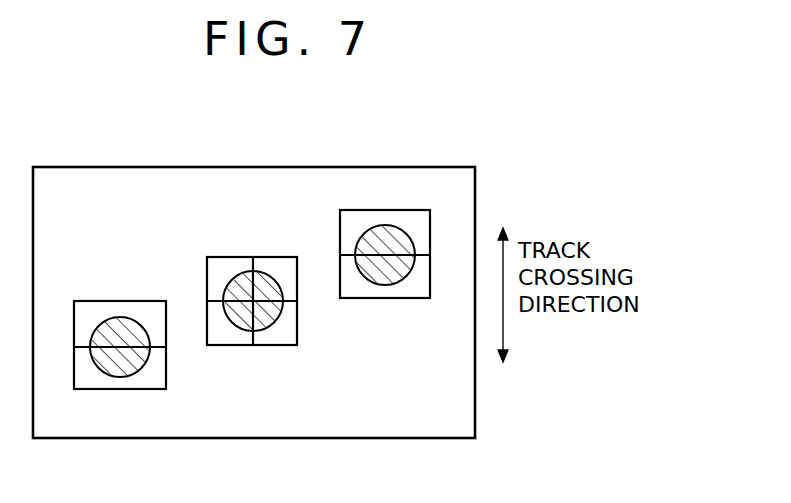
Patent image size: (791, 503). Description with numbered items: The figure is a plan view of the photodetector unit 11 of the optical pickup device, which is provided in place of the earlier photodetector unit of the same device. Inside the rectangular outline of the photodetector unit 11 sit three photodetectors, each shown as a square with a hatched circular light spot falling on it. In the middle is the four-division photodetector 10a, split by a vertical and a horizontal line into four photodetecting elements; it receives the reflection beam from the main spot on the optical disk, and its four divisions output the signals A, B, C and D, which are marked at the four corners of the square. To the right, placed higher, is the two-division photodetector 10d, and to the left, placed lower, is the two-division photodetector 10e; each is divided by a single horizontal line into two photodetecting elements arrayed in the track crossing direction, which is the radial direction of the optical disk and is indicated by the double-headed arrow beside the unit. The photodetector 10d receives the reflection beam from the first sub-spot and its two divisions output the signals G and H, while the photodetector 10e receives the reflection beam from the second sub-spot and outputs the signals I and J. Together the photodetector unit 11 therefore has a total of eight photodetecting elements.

The four-division photodetector 10a is at (245, 262).
The two-division photodetector 10d is at (377, 216).
The two-division photodetector 10e is at (133, 310).
The photodetector unit 11 is at (477, 402).
The signal A is at (219, 268).
The signal B is at (222, 335).
The signal C is at (288, 335).
The signal D is at (283, 268).
The signal G is at (425, 229).
The signal H is at (417, 288).
The signal I is at (90, 312).
The signal J is at (153, 375).